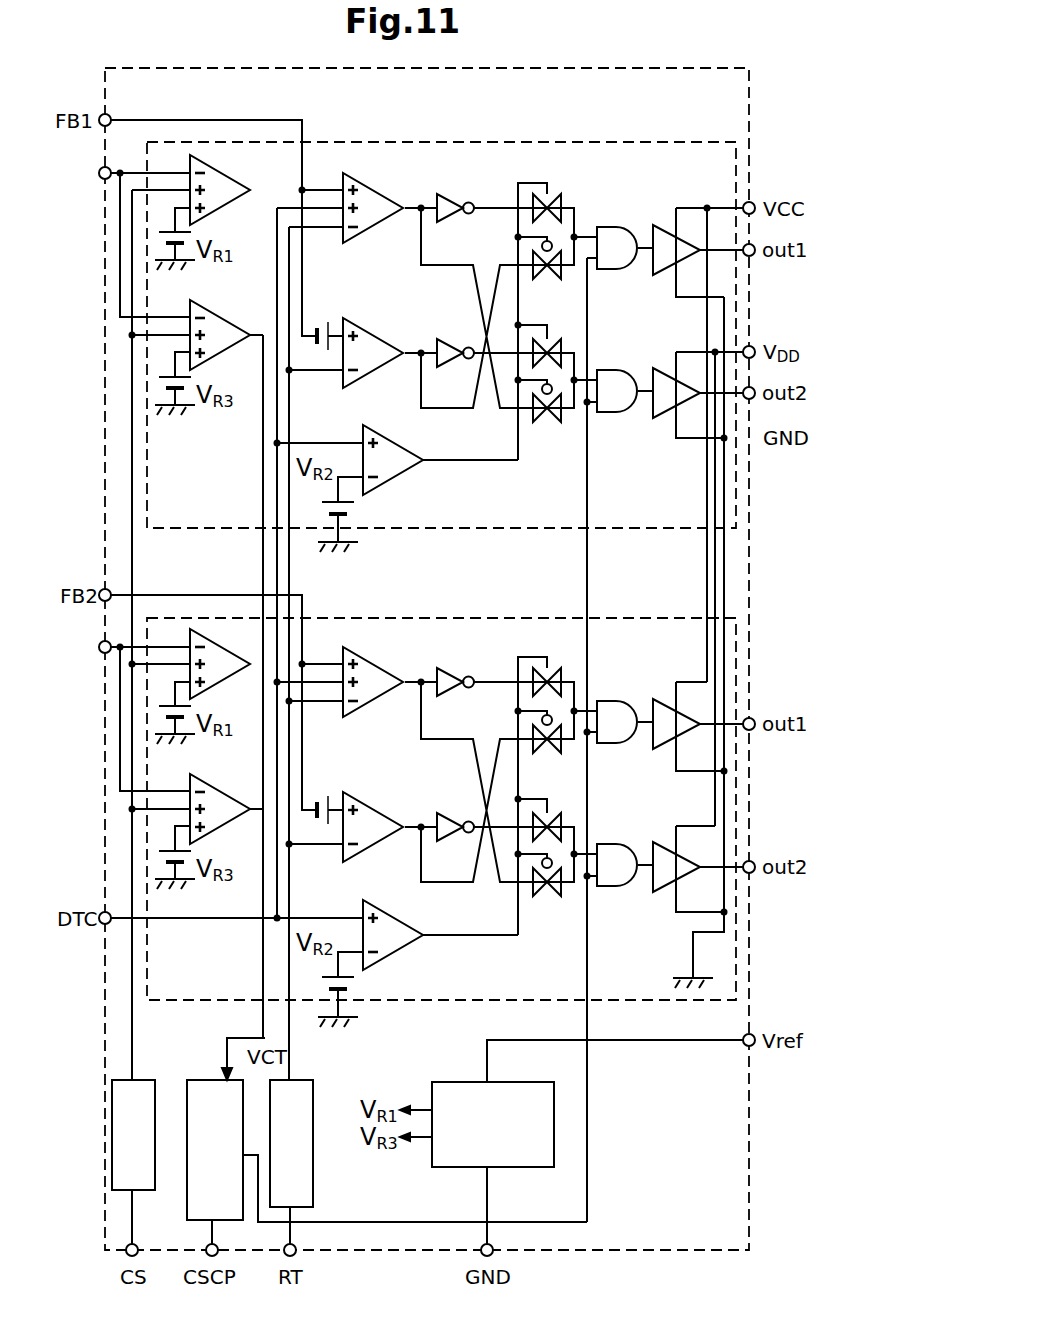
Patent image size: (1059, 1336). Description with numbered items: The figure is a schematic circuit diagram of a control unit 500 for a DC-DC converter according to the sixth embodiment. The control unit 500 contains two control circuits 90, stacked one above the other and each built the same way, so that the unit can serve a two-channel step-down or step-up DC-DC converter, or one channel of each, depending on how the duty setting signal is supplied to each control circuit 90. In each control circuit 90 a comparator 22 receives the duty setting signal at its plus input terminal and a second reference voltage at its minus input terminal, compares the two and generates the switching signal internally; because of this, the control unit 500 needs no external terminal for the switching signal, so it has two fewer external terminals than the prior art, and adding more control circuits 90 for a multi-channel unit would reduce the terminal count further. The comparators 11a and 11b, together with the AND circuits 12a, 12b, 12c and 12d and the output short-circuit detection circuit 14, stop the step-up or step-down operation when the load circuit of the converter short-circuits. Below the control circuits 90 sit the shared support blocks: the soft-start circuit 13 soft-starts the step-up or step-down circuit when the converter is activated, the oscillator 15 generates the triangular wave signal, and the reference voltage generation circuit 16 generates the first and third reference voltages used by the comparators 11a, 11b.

The control unit 500 is at (687, 67).
The control circuit 90 is at (566, 142).
The comparator 11a is at (229, 320).
The comparator 11b is at (229, 794).
The AND circuit 12a is at (609, 227).
The AND circuit 12b is at (611, 370).
The AND circuit 12c is at (609, 701).
The AND circuit 12d is at (611, 844).
The comparator 22 is at (396, 478).
The soft-start circuit 13 is at (151, 1078).
The output short-circuit detection circuit 14 is at (196, 1078).
The oscillator 15 is at (314, 1078).
The reference voltage generation circuit 16 is at (503, 1082).